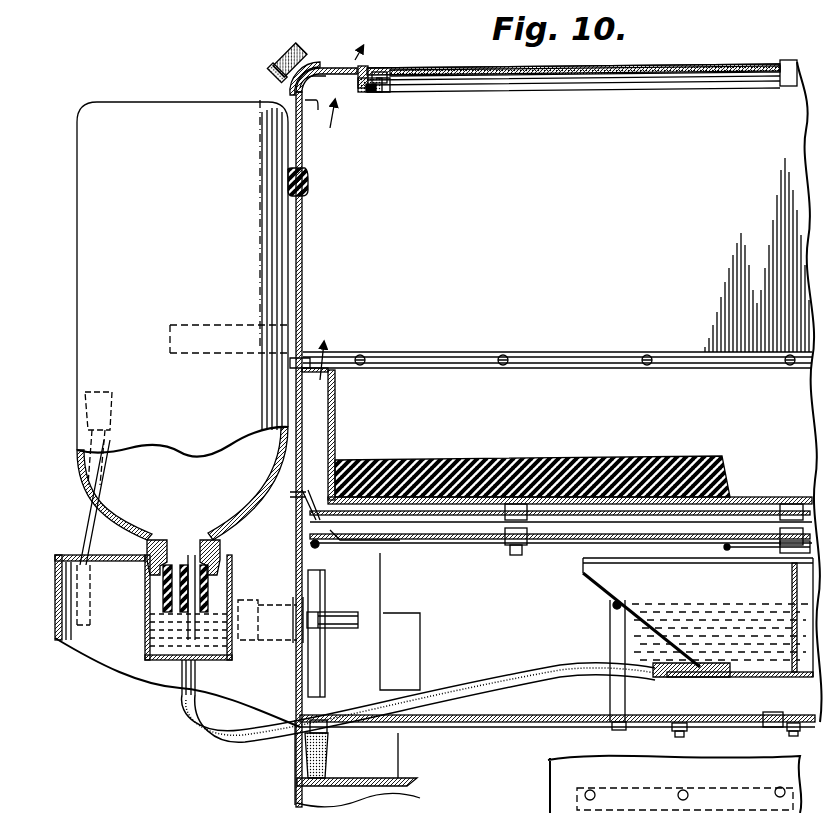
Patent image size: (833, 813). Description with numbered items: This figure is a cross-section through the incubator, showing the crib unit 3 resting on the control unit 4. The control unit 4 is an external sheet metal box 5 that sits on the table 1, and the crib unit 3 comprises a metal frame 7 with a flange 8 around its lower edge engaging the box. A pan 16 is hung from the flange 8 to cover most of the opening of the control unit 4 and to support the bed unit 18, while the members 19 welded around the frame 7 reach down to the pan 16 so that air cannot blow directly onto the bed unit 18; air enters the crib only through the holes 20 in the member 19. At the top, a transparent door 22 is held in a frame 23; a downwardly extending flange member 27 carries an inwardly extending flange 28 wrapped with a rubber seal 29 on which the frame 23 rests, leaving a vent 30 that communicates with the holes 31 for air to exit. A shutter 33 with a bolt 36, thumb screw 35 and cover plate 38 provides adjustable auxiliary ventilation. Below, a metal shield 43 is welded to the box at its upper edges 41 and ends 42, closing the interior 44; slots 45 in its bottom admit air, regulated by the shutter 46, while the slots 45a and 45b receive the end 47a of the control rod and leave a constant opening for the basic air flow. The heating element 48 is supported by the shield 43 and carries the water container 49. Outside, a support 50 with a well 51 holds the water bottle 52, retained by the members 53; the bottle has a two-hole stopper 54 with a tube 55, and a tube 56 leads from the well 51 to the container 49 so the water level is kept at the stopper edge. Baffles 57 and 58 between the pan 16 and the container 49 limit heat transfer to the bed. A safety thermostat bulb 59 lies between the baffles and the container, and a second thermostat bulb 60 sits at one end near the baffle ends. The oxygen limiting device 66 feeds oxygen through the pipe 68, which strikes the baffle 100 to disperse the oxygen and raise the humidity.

The table 1 is at (300, 795).
The crib unit 3 is at (718, 62).
The control unit 4 is at (508, 728).
The sheet metal box 5 is at (295, 663).
The metal frame 7 is at (304, 291).
The flange 8 is at (296, 492).
The pan 16 is at (748, 496).
The bed unit 18 is at (592, 452).
The member 19 is at (337, 431).
The holes 20 is at (320, 374).
The transparent door 22 is at (438, 68).
The frame 23 is at (390, 68).
The downwardly extending flange member 27 is at (362, 88).
The inwardly extending flange 28 is at (370, 92).
The rubber seal 29 is at (386, 93).
The vent 30 is at (367, 66).
The holes 31 is at (358, 78).
The shutter 33 is at (320, 114).
The thumb screw 35 is at (276, 66).
The bolt 36 is at (276, 48).
The cover plate 38 is at (291, 88).
The upper edges of the sheet metal box 41 is at (793, 680).
The ends 42 is at (326, 587).
The metal shield 43 is at (528, 728).
The interior 44 is at (492, 712).
The slots 45 is at (697, 712).
The slot 45a is at (770, 730).
The slot 45b is at (674, 784).
The shutter 46 is at (700, 732).
The end of the control rod 47a is at (773, 712).
The heating element 48 is at (612, 603).
The water container 49 is at (647, 620).
The support 50 is at (56, 566).
The well 51 is at (148, 627).
The water bottle 52 is at (76, 293).
The members 53 is at (88, 494).
The two-hole stopper 54 is at (164, 602).
The tube 55 is at (189, 548).
The tube 56 is at (187, 710).
The baffle 57 is at (442, 520).
The baffle 58 is at (542, 540).
The safety thermostat bulb 59 is at (745, 552).
The second thermostat bulb 60 is at (318, 546).
The oxygen limiting device 66 is at (252, 644).
The pipe 68 is at (342, 629).
The baffle 100 is at (381, 596).